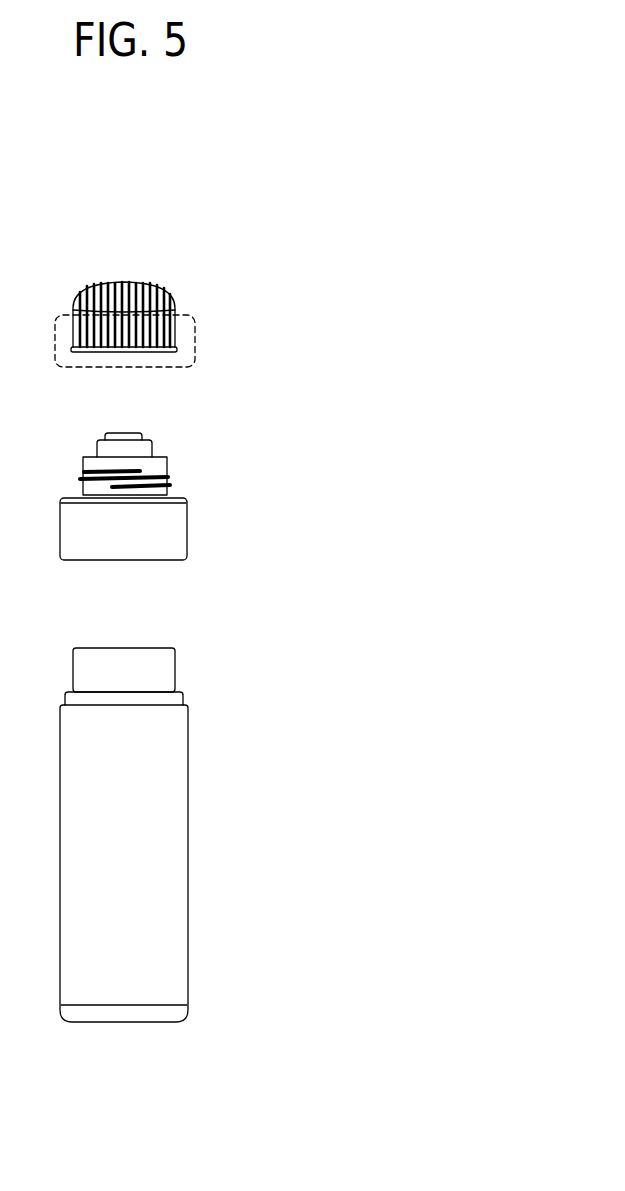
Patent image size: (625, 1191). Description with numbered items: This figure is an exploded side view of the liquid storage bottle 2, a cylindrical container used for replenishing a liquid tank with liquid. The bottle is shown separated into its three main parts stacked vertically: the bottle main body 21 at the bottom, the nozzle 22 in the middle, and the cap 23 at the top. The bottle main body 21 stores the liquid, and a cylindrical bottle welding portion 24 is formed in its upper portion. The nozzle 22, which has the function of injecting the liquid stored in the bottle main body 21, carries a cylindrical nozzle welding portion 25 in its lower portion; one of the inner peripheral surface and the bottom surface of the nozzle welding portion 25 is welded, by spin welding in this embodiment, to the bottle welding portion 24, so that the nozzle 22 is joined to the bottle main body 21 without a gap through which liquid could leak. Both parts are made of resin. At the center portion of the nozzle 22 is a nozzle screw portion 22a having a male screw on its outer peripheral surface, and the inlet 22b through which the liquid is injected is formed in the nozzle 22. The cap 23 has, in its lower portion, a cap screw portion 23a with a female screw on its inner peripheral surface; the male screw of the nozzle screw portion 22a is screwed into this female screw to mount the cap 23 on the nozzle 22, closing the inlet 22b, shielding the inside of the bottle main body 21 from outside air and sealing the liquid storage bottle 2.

The liquid storage bottle 2 is at (327, 238).
The bottle main body 21 is at (268, 650).
The nozzle 22 is at (268, 433).
The nozzle screw portion 22a is at (162, 465).
The inlet 22b is at (135, 432).
The cap 23 is at (270, 283).
The cap screw portion 23a is at (196, 337).
The bottle welding portion 24 is at (170, 668).
The nozzle welding portion 25 is at (180, 530).